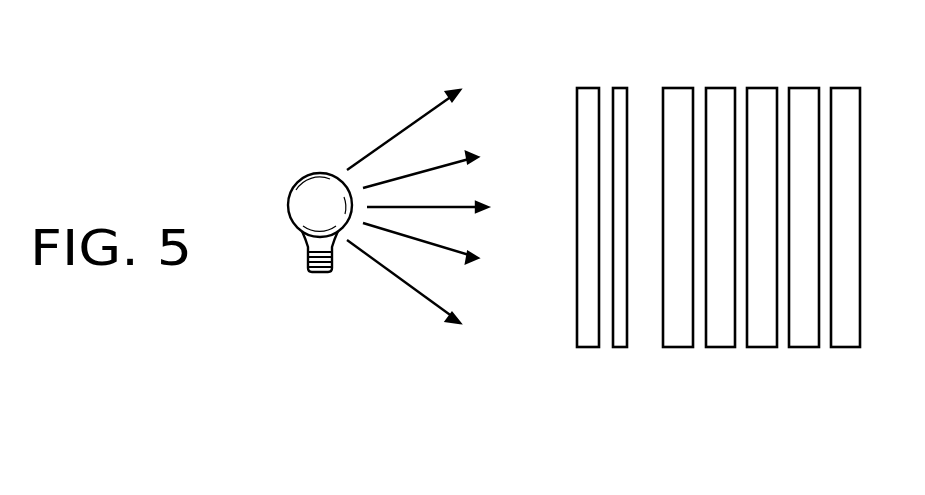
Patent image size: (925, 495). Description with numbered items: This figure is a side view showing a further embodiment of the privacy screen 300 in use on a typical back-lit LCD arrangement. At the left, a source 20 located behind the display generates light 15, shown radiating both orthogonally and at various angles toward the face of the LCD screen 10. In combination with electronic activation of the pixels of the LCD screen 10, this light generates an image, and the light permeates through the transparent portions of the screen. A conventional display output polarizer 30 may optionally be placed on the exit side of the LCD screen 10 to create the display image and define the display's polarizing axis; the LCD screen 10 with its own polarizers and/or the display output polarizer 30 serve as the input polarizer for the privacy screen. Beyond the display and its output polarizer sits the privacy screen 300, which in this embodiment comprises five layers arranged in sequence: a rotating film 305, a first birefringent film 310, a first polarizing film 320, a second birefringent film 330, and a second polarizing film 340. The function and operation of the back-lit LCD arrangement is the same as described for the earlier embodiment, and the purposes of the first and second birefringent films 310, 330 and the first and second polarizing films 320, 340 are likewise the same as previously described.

The LCD screen 10 is at (588, 347).
The light 15 is at (428, 108).
The source 20 is at (302, 196).
The display output polarizer 30 is at (620, 347).
The privacy screen 300 is at (764, 242).
The rotating film 305 is at (678, 347).
The first birefringent film 310 is at (719, 347).
The first polarizing film 320 is at (761, 347).
The second birefringent film 330 is at (803, 347).
The second polarizing film 340 is at (845, 347).